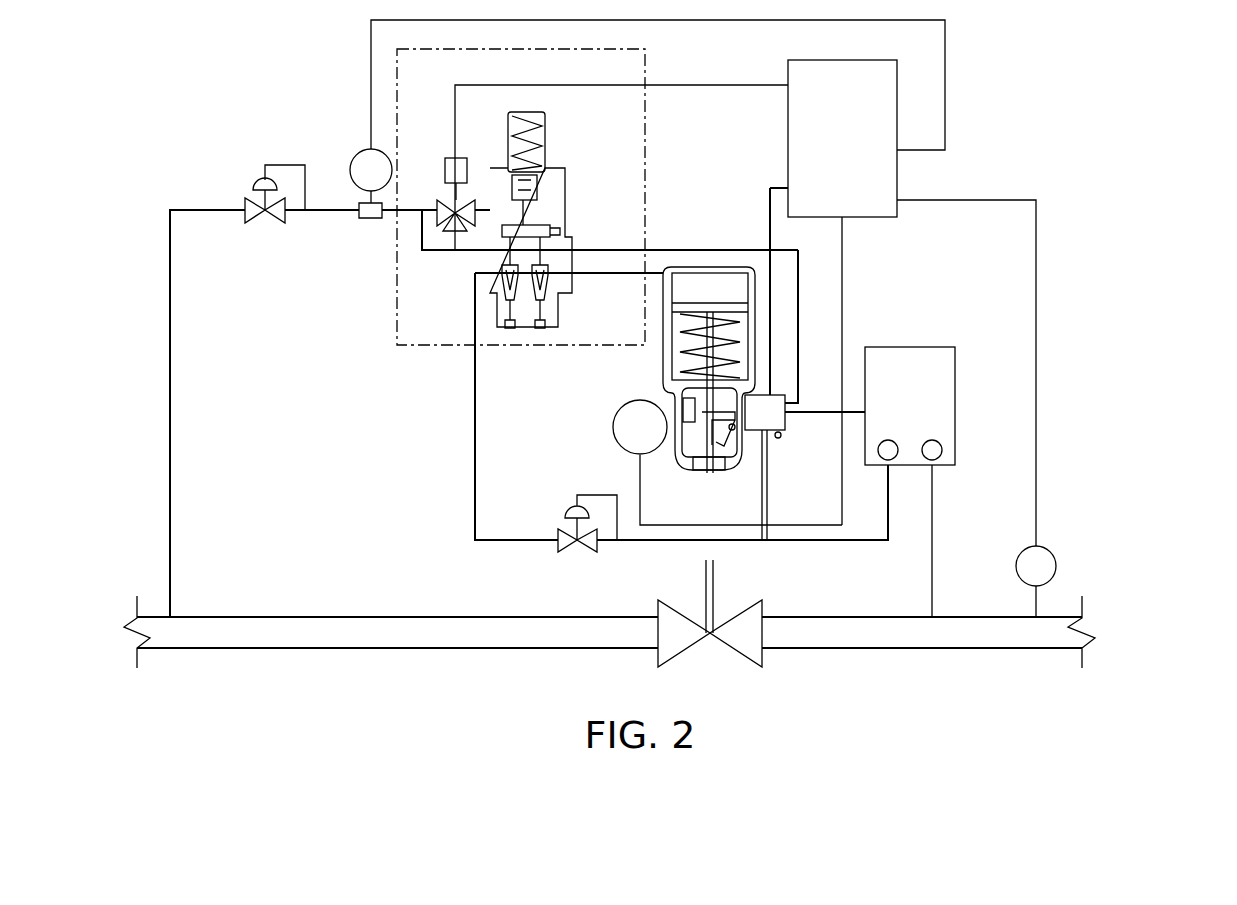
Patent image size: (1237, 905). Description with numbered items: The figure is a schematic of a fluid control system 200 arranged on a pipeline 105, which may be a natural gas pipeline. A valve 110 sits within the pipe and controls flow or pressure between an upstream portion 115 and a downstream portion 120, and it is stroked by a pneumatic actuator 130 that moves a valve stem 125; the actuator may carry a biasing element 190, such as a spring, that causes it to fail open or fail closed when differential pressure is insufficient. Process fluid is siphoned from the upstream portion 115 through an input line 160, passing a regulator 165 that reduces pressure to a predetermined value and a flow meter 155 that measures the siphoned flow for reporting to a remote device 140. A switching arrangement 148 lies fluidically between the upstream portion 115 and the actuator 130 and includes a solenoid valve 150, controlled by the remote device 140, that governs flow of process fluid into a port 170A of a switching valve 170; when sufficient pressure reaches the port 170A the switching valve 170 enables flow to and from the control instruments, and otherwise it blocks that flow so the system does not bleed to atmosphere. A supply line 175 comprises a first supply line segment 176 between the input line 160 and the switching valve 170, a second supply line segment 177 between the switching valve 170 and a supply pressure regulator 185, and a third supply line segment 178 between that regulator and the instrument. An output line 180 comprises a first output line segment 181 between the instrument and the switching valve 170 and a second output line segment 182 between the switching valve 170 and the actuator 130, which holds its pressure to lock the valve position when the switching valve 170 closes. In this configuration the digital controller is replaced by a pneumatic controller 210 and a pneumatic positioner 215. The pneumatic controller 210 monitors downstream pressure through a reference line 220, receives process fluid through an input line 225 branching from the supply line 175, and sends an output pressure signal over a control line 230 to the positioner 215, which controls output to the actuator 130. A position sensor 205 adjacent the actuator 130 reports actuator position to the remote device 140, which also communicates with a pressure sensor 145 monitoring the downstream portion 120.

The pipeline 105 is at (888, 682).
The valve 110 is at (745, 613).
The upstream portion 115 is at (303, 632).
The downstream portion 120 is at (833, 615).
The valve stem 125 is at (703, 604).
The pneumatic actuator 130 is at (667, 383).
The remote device 140 is at (856, 220).
The pressure sensor 145 is at (1053, 548).
The switching arrangement 148 is at (646, 63).
The solenoid valve 150 is at (446, 162).
The flow meter 155 is at (366, 153).
The input line 160 is at (170, 417).
The regulator 165 is at (255, 183).
The switching valve 170 is at (567, 211).
The port 170A is at (478, 205).
The supply line 175 is at (478, 272).
The first supply line segment 176 is at (440, 253).
The second supply line segment 177 is at (477, 490).
The third supply line segment 178 is at (690, 525).
The output line 180 is at (593, 278).
The first output line segment 181 is at (670, 249).
The second output line segment 182 is at (660, 272).
The supply pressure regulator 185 is at (573, 553).
The biasing element 190 is at (688, 351).
The fluid control system 200 is at (1120, 74).
The position sensor 205 is at (620, 450).
The pneumatic controller 210 is at (900, 347).
The pneumatic positioner 215 is at (786, 432).
The reference line 220 is at (935, 512).
The input line 225 is at (893, 496).
The control line 230 is at (827, 410).